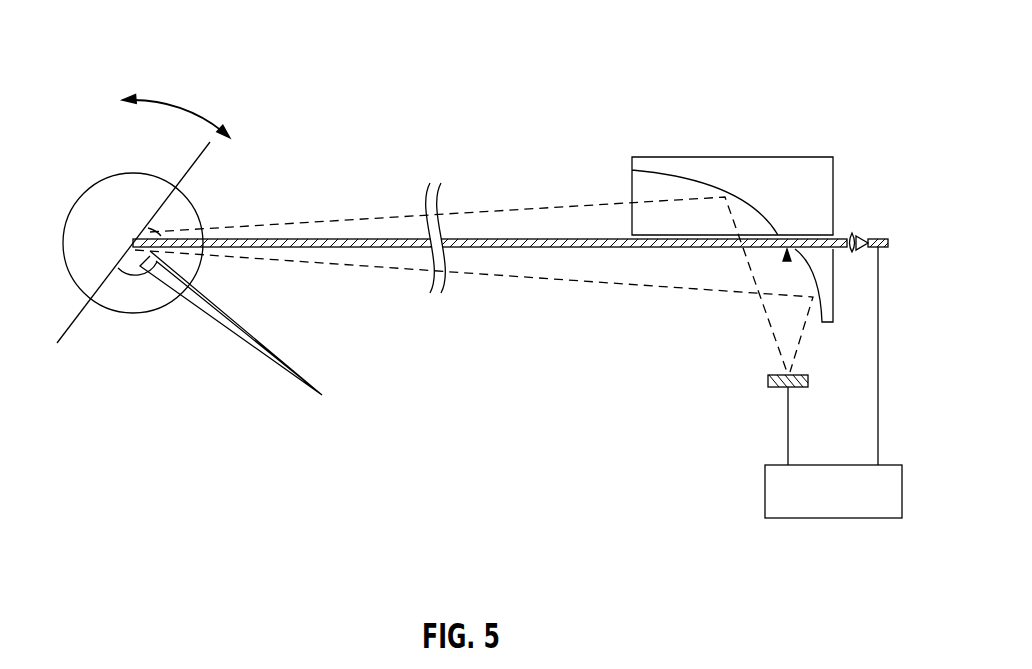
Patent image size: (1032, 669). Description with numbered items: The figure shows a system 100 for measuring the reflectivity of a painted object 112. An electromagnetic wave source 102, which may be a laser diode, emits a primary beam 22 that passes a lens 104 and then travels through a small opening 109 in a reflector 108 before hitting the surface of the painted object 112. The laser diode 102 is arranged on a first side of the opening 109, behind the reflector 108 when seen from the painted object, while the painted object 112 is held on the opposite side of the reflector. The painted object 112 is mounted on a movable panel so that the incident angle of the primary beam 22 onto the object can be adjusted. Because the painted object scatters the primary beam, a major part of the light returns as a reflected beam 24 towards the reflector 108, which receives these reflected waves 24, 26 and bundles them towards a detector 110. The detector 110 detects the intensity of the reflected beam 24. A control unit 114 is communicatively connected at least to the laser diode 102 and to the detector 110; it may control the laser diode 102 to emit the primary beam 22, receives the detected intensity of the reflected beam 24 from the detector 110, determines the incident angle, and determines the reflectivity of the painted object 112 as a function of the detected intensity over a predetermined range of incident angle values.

The system 100 is at (112, 66).
The painted object 112 is at (190, 167).
The primary beam 22 is at (466, 236).
The reflected beam 24 is at (362, 219).
The light beam 26 is at (240, 348).
The reflector 108 is at (760, 168).
The lens 104 is at (851, 232).
The electromagnetic wave source 102 is at (874, 236).
The opening 109 is at (787, 261).
The detector 110 is at (768, 380).
The control unit 114 is at (835, 507).